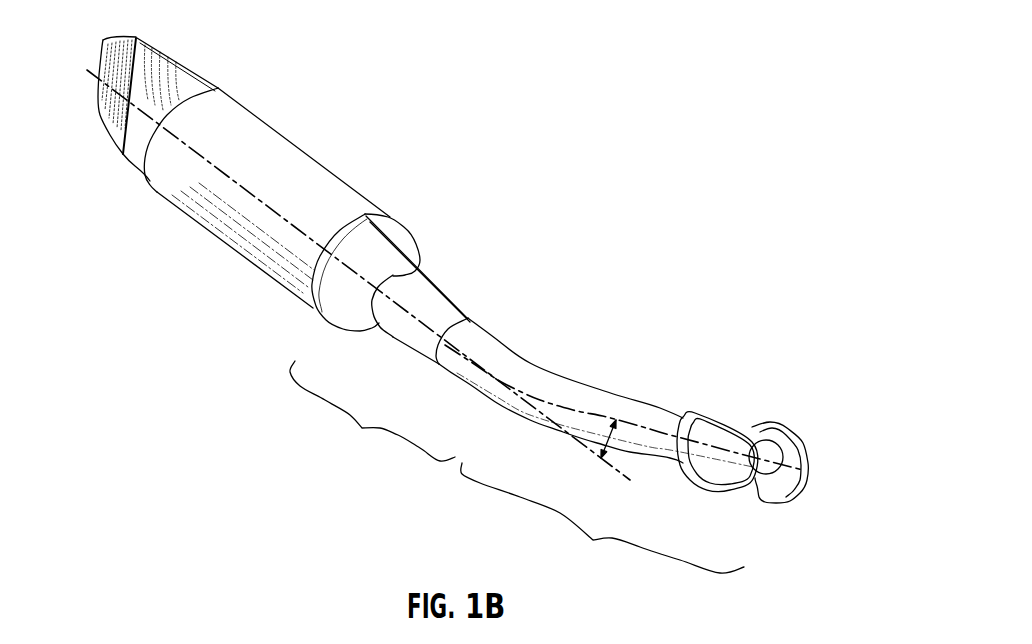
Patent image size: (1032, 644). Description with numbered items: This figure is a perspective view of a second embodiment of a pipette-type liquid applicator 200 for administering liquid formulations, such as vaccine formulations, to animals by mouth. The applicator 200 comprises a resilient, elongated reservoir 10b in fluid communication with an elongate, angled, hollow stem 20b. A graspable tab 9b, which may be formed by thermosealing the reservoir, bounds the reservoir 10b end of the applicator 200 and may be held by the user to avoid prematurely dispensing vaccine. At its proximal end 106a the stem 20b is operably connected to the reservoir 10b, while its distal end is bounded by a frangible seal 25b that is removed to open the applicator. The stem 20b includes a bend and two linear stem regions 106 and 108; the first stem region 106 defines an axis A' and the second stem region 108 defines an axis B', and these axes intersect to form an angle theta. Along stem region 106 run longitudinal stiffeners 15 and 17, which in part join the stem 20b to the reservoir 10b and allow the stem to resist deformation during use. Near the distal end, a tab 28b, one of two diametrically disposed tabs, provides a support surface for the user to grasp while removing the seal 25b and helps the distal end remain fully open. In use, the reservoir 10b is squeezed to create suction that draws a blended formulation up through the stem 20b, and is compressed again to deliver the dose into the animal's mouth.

The graspable tab 9b is at (145, 95).
The resilient reservoir 10b is at (289, 175).
The liquid applicator 200 is at (323, 163).
The longitudinal stiffener 15 is at (453, 299).
The longitudinal stiffener 17 is at (381, 341).
The hollow stem 20b is at (527, 377).
The frangible seal 25b is at (787, 495).
The tab 28b is at (723, 490).
The stem region 106 is at (372, 416).
The proximal end 106a is at (315, 341).
The stem region 108 is at (602, 522).
The axis A' is at (66, 31).
The axis B' is at (835, 441).